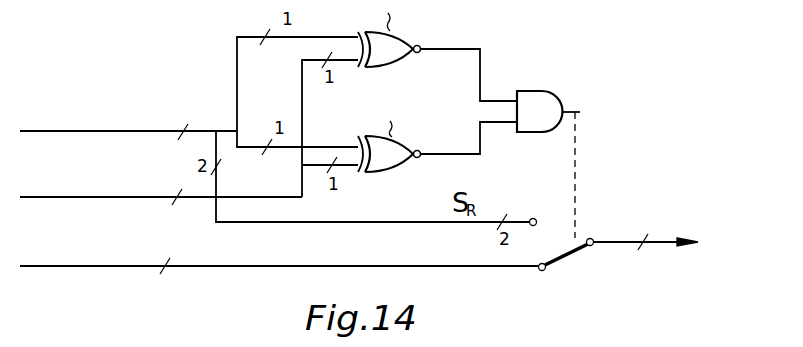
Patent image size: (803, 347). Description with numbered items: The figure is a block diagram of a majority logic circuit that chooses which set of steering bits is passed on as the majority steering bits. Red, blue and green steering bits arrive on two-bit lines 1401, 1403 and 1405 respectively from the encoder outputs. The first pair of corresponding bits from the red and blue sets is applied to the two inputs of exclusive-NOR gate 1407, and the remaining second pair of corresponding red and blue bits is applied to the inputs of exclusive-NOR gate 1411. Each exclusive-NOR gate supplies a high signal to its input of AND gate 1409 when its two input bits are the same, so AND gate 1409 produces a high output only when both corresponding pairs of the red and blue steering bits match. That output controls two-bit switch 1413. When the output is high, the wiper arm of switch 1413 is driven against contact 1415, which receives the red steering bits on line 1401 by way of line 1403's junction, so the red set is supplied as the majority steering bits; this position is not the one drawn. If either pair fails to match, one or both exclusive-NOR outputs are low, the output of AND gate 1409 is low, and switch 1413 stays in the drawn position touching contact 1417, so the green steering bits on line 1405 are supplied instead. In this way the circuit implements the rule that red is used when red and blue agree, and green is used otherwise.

The two-bit line 1401 is at (80, 132).
The two-bit line 1403 is at (90, 198).
The two-bit line 1405 is at (95, 267).
The exclusive-NOR gate 1407 is at (398, 64).
The exclusive-NOR gate 1411 is at (400, 171).
The AND gate 1409 is at (530, 133).
The contact 1415 is at (535, 218).
The contact 1417 is at (539, 272).
The two-bit switch 1413 is at (573, 252).